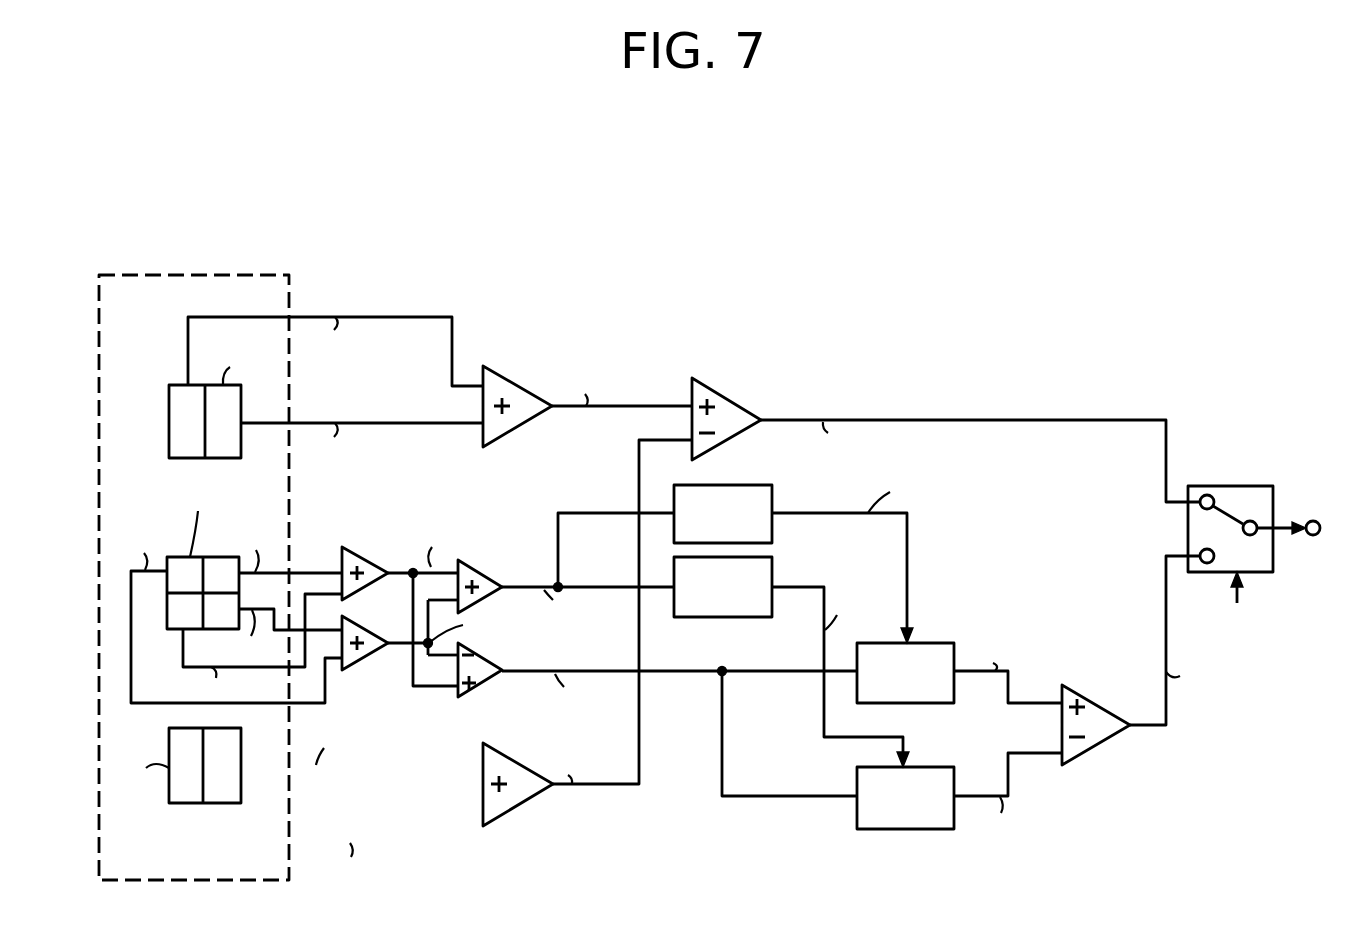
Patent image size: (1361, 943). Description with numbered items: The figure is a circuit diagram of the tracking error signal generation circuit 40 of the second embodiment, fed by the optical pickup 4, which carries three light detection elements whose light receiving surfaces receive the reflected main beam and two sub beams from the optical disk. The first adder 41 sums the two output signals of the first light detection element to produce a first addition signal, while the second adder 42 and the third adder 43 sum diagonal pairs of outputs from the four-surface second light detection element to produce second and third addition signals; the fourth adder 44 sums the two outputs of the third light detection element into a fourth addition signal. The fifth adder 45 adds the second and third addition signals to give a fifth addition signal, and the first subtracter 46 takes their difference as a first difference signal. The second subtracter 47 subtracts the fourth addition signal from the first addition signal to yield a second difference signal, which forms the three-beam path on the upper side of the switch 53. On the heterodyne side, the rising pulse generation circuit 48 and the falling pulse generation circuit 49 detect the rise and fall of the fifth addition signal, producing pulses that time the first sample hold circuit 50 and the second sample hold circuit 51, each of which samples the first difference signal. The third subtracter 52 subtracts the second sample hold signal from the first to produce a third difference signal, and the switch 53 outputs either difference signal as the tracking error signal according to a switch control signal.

The optical pickup 4 is at (207, 272).
The tracking error signal generation circuit 40 is at (729, 573).
The first adder 41 is at (507, 375).
The second adder 42 is at (372, 566).
The third adder 43 is at (372, 651).
The fourth adder 44 is at (534, 798).
The fifth adder 45 is at (478, 570).
The first subtracter 46 is at (486, 673).
The second subtracter 47 is at (727, 393).
The rising pulse generation circuit 48 is at (787, 490).
The falling pulse generation circuit 49 is at (774, 568).
The first sample hold circuit 50 is at (934, 642).
The second sample hold circuit 51 is at (921, 767).
The third subtracter 52 is at (1099, 702).
The switch 53 is at (1227, 486).